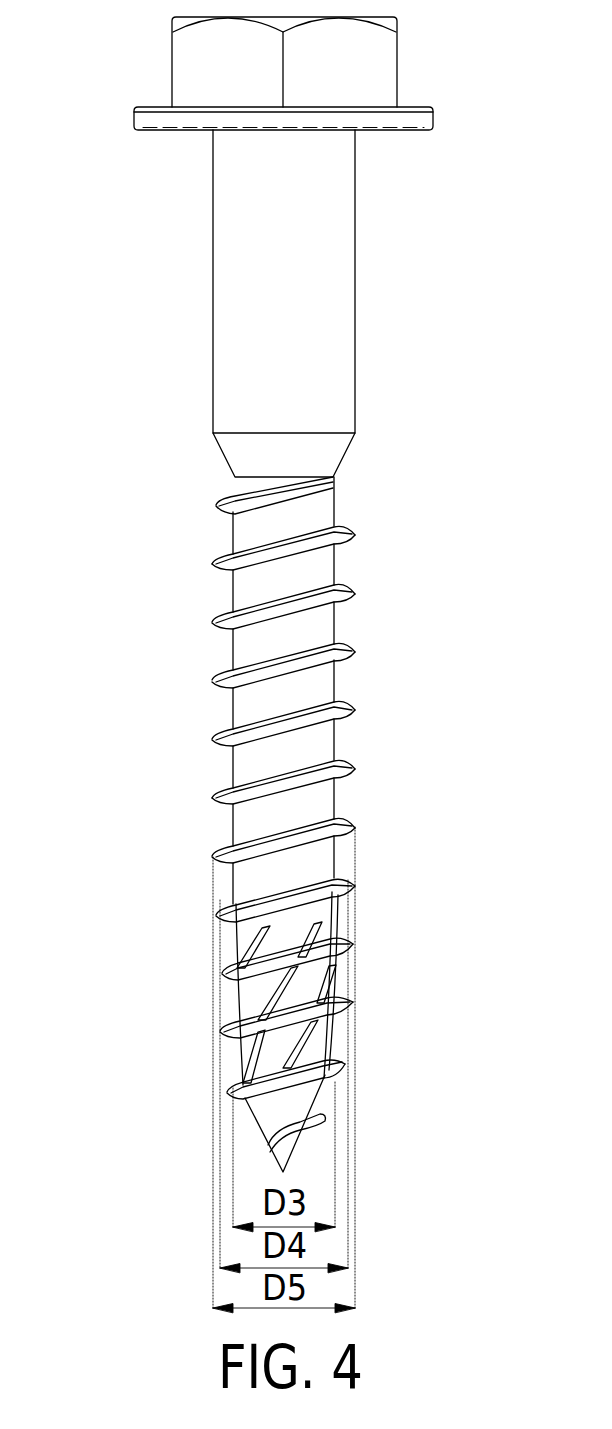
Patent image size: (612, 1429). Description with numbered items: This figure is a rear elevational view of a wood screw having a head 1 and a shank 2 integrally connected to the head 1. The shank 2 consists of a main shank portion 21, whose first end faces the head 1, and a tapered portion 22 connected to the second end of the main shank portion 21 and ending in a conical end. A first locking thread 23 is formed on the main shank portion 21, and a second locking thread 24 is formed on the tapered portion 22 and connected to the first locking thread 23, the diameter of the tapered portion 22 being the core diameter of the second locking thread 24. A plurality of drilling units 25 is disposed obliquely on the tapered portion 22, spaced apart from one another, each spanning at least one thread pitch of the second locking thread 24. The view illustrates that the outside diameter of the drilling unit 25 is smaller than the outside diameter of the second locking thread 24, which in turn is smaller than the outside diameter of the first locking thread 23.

The head 1 is at (363, 70).
The shank 2 is at (261, 651).
The main shank portion 21 is at (311, 628).
The tapered portion 22 is at (295, 988).
The first locking thread 23 is at (228, 683).
The second locking thread 24 is at (232, 976).
The drilling unit 25 is at (236, 1000).